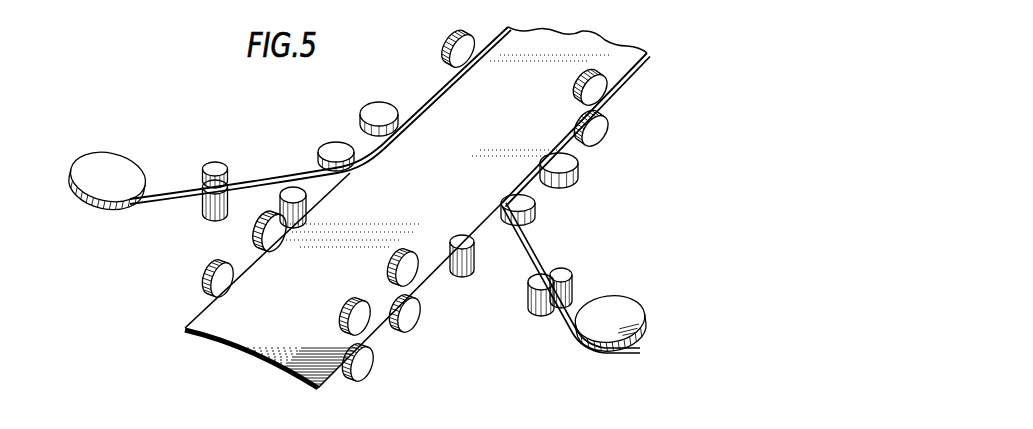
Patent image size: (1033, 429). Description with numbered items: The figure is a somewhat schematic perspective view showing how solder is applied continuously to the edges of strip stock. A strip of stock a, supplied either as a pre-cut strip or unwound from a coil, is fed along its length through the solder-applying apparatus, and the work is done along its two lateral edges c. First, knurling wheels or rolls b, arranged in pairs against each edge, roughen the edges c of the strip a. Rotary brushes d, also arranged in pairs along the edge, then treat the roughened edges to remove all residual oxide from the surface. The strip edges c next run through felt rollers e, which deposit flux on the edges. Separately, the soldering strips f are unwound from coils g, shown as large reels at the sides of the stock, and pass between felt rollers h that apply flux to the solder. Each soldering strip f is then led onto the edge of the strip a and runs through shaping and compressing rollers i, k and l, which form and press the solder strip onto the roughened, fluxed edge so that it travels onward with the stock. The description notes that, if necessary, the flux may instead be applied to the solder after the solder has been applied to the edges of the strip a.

The strip of stock a is at (252, 337).
The knurling wheels b is at (367, 360).
The edges c is at (333, 378).
The rotary brushes d is at (418, 311).
The felt rollers e is at (467, 276).
The soldering strips f is at (567, 318).
The coils g is at (641, 340).
The felt rollers h is at (558, 273).
The shaping and compressing rollers i is at (535, 212).
The shaping and compressing rollers k is at (572, 181).
The shaping and compressing rollers l is at (602, 130).